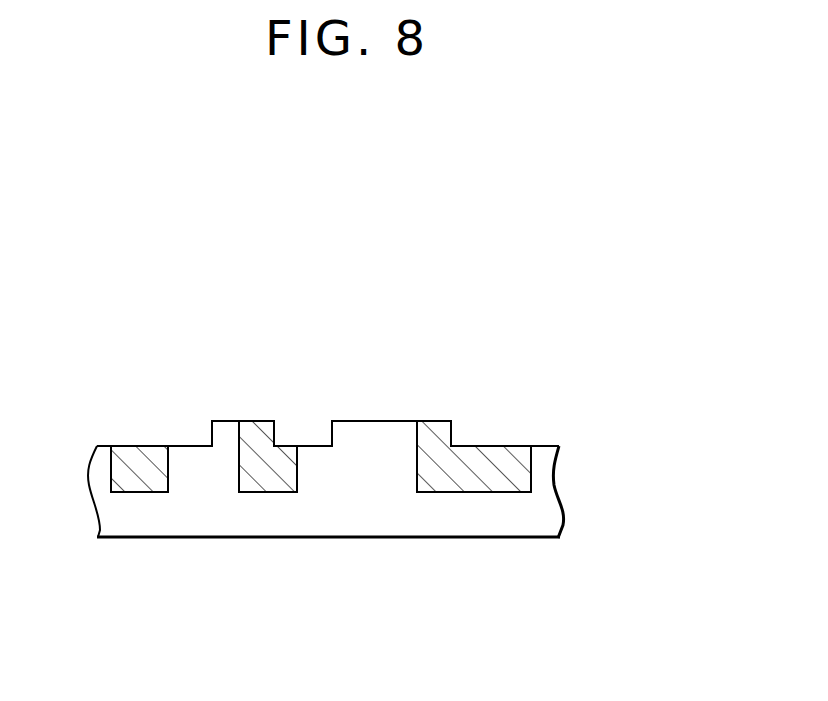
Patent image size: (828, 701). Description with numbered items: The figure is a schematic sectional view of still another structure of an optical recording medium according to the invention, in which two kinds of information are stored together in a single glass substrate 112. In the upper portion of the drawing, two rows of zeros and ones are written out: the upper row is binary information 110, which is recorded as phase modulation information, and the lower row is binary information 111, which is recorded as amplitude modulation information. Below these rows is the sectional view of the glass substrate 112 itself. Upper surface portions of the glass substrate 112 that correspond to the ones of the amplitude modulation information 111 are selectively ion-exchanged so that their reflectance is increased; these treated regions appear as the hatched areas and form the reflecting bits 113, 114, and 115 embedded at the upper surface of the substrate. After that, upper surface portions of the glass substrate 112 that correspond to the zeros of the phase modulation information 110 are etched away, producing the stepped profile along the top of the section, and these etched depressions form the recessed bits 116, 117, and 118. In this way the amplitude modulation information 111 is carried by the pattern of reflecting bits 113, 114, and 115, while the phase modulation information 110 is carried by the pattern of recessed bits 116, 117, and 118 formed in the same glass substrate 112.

The binary information 110 is at (524, 199).
The binary information 111 is at (530, 258).
The glass substrate 112 is at (568, 471).
The reflecting bit 113 is at (142, 487).
The reflecting bit 114 is at (272, 488).
The reflecting bit 115 is at (492, 488).
The recessed bit 116 is at (159, 432).
The recessed bit 117 is at (314, 429).
The recessed bit 118 is at (487, 437).